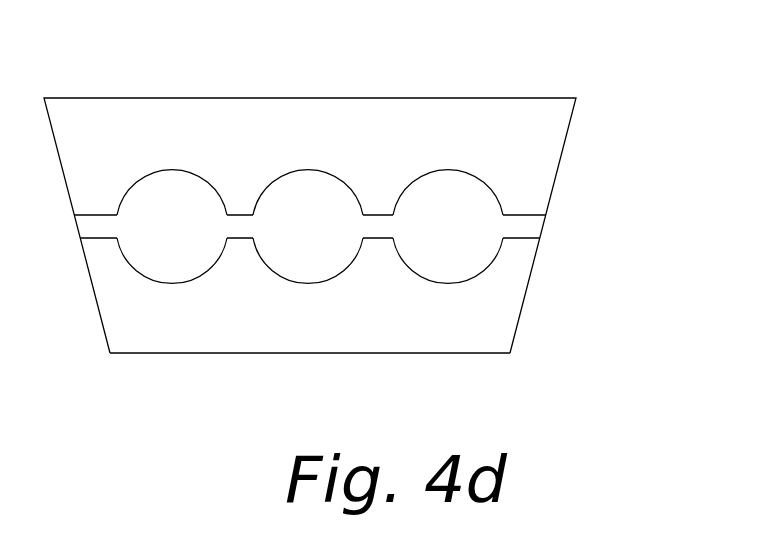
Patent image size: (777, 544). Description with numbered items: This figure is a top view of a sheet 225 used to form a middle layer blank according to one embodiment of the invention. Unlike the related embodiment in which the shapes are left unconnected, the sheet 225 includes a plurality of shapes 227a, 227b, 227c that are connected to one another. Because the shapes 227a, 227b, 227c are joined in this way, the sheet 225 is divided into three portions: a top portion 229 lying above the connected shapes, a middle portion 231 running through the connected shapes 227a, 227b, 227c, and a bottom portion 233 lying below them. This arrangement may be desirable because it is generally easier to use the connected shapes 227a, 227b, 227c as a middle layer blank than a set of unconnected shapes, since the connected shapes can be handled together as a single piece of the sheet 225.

The sheet 225 is at (533, 43).
The shape 227a is at (169, 185).
The shape 227b is at (307, 185).
The shape 227c is at (447, 185).
The top portion 229 is at (80, 108).
The middle portion 231 is at (540, 222).
The bottom portion 233 is at (512, 327).